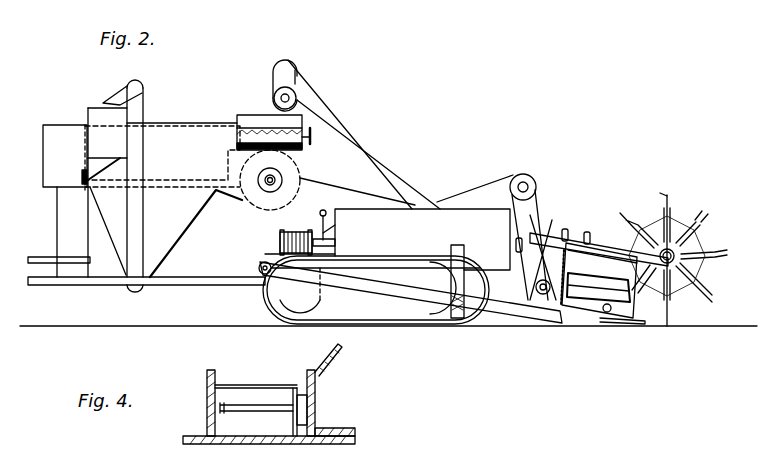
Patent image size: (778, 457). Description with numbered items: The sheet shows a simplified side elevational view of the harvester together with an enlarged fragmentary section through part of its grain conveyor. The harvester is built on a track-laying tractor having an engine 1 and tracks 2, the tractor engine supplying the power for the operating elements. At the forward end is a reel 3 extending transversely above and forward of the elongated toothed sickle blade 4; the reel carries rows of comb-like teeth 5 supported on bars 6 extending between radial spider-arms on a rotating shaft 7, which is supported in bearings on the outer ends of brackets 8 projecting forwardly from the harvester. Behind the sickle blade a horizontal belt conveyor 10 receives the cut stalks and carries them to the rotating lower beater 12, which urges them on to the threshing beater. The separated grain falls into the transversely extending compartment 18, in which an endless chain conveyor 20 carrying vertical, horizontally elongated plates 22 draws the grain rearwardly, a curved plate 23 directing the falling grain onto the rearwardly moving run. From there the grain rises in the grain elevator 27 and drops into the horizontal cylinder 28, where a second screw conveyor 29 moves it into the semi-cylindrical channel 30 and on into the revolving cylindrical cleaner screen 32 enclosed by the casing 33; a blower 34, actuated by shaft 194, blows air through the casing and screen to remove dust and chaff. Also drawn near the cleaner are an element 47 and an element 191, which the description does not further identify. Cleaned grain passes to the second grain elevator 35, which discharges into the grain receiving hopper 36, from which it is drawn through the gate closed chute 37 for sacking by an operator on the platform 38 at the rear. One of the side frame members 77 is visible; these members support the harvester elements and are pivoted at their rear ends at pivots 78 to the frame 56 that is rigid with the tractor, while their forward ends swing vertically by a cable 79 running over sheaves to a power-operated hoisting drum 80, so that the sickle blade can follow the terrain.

In FIG. 2, the engine 1 is at (454, 215).
In FIG. 2, the tracks 2 is at (420, 256).
In FIG. 2, the reel 3 is at (708, 224).
In FIG. 2, the sickle blade 4 is at (642, 321).
In FIG. 2, the comb-like teeth 5 is at (718, 298).
In FIG. 2, the bars 6 is at (720, 256).
In FIG. 2, the rotating shaft 7 is at (698, 264).
In FIG. 2, the brackets 8 is at (594, 246).
In FIG. 2, the belt conveyor 10 is at (607, 313).
In FIG. 2, the lower beater 12 is at (599, 280).
In FIG. 4, the grain receiving compartment 18 is at (304, 375).
In FIG. 4, the endless chain conveyor 20 is at (318, 410).
In FIG. 4, the plates 22 is at (232, 405).
In FIG. 4, the curved plate 23 is at (327, 350).
In FIG. 2, the grain elevator 27 is at (382, 153).
In FIG. 2, the cylinder 28 is at (300, 100).
In FIG. 2, the second screw conveyor 29 is at (295, 93).
In FIG. 2, the channel 30 is at (303, 152).
In FIG. 2, the cleaner screen 32 is at (183, 125).
In FIG. 2, the casing 33 is at (163, 122).
In FIG. 2, the blower 34 is at (242, 204).
In FIG. 2, the second grain elevator 35 is at (145, 208).
In FIG. 2, the grain receiving hopper 36 is at (96, 110).
In FIG. 2, the gate closed chute 37 is at (82, 178).
In FIG. 2, the platform 38 is at (44, 256).
In FIG. 2, the link 47 is at (338, 183).
In FIG. 2, the frame 56 is at (98, 286).
In FIG. 2, the frame members 77 is at (400, 292).
In FIG. 2, the pivots 78 is at (259, 282).
In FIG. 2, the cable 79 is at (540, 193).
In FIG. 2, the hoisting drum 80 is at (293, 236).
In FIG. 2, the lever 191 is at (320, 134).
In FIG. 2, the shaft 194 is at (280, 186).